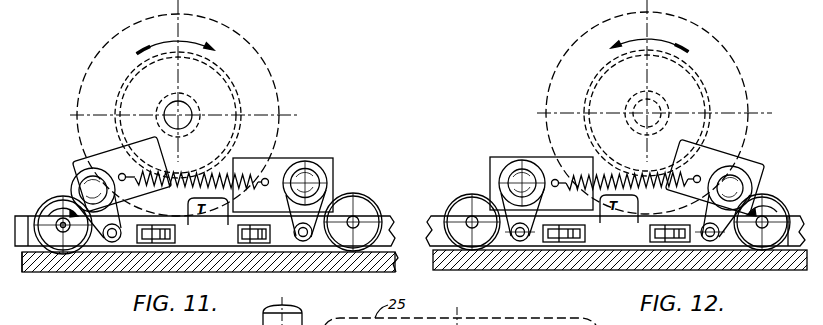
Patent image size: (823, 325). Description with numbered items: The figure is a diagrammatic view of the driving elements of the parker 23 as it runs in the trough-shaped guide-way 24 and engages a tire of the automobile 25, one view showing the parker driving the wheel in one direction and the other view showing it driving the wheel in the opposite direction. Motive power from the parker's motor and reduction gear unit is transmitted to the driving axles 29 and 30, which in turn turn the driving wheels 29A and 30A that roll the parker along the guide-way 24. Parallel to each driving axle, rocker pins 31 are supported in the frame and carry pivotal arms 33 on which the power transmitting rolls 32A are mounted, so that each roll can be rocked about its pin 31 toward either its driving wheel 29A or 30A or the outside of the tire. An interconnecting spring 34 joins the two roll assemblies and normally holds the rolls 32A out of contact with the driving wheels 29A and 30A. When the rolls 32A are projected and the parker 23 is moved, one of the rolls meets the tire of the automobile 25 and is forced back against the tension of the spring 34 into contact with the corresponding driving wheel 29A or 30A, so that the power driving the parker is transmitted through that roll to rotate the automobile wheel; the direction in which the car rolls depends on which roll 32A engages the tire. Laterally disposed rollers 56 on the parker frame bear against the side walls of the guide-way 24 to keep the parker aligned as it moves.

In FIG. 12, the parker 23 is at (608, 243).
In FIG. 11, the guide-way 24 is at (30, 250).
In FIG. 12, the guide-way 24 is at (805, 256).
In FIG. 11, the automobile 25 is at (245, 36).
In FIG. 12, the automobile 25 is at (583, 33).
In FIG. 11, the driving axle 29 is at (371, 211).
In FIG. 12, the driving axle 29 is at (762, 228).
In FIG. 11, the driving wheel 29A is at (357, 219).
In FIG. 12, the driving wheel 29A is at (779, 200).
In FIG. 11, the driving axle 30 is at (63, 228).
In FIG. 12, the driving axle 30 is at (470, 226).
In FIG. 11, the driving wheel 30A is at (47, 201).
In FIG. 12, the driving wheel 30A is at (461, 201).
In FIG. 11, the rocker pin 31 is at (111, 241).
In FIG. 12, the rocker pin 31 is at (520, 240).
In FIG. 11, the power transmitting roll 32A is at (96, 178).
In FIG. 12, the power transmitting roll 32A is at (518, 178).
In FIG. 11, the pivotal arm 33 is at (75, 180).
In FIG. 12, the pivotal arm 33 is at (503, 170).
In FIG. 11, the interconnecting spring 34 is at (220, 176).
In FIG. 12, the interconnecting spring 34 is at (627, 173).
In FIG. 11, the laterally disposed roller 56 is at (246, 236).
In FIG. 12, the laterally disposed roller 56 is at (553, 237).